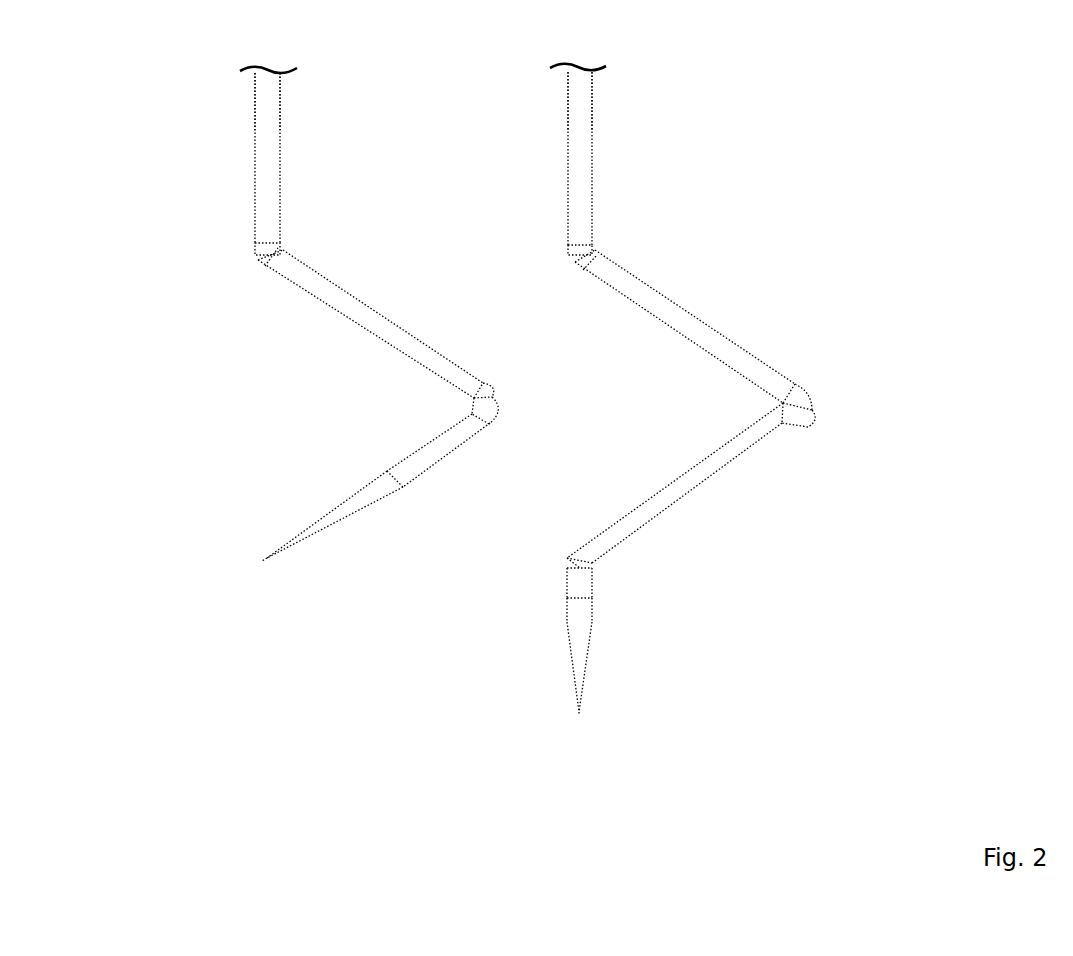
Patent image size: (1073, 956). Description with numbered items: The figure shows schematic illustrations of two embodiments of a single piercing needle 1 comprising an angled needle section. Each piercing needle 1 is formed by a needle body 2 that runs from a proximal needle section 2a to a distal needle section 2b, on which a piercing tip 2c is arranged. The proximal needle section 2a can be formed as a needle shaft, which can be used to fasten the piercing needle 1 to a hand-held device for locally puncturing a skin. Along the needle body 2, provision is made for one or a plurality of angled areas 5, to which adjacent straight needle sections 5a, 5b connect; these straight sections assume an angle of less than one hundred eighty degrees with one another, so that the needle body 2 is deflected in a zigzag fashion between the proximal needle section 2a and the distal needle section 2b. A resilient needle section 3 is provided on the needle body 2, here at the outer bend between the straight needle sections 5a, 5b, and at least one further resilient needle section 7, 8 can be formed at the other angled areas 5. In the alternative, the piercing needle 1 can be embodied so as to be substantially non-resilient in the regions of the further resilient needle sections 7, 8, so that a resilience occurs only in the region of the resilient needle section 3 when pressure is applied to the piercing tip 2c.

The piercing needle 1 is at (817, 44).
The needle body 2 is at (262, 176).
The proximal needle section 2a is at (258, 103).
The distal needle section 2b is at (350, 511).
The piercing tip 2c is at (265, 557).
The resilient needle section 3 is at (478, 405).
The angled area 5 is at (268, 254).
The straight needle section 5a is at (353, 318).
The straight needle section 5b is at (430, 458).
The further resilient needle section 7 is at (255, 253).
The further resilient needle section 8 is at (572, 572).